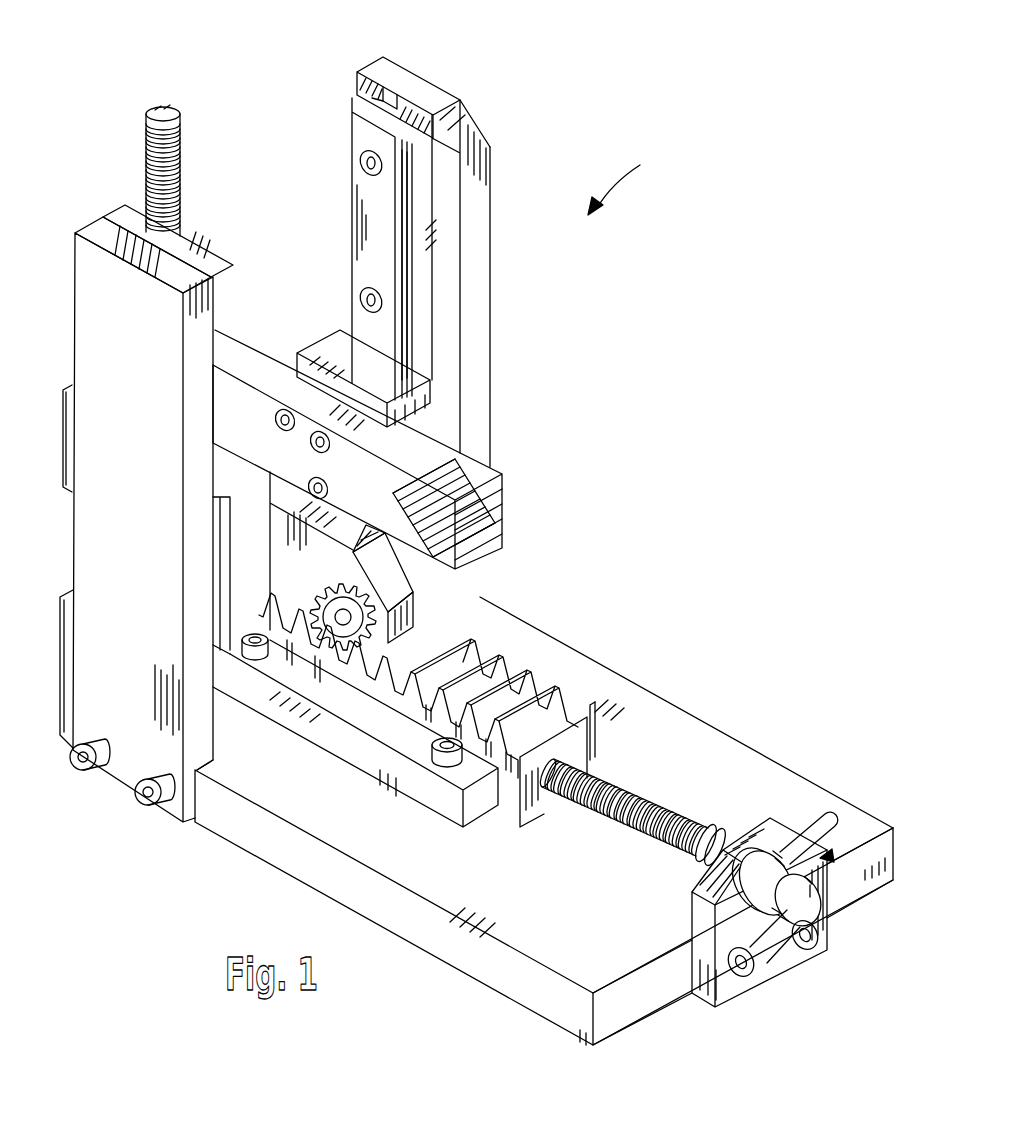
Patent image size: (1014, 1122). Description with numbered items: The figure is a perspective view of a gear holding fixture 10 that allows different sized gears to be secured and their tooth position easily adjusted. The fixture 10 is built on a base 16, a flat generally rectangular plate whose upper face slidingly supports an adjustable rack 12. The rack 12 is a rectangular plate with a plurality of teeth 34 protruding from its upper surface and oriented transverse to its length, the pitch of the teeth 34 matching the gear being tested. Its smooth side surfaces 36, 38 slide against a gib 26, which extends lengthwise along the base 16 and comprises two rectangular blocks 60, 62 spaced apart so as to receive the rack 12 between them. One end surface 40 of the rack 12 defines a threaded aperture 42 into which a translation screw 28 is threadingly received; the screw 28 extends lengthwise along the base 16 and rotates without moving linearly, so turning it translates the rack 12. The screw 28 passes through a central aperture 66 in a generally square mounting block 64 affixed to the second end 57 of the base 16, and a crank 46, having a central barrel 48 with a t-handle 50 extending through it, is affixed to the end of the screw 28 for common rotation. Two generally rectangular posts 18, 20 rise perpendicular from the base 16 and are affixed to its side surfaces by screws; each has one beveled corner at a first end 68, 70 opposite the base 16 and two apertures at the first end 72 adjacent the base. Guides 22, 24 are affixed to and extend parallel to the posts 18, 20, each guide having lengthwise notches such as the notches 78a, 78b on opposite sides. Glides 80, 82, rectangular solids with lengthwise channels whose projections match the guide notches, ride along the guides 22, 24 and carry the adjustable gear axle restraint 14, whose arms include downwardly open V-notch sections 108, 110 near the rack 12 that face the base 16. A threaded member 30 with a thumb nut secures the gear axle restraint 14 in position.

The gear holding fixture 10 is at (628, 186).
The adjustable rack 12 is at (513, 653).
The adjustable gear axle restraint 14 is at (249, 322).
The base 16 is at (403, 897).
The post 18 is at (88, 272).
The post 20 is at (470, 117).
The guide 22 is at (173, 236).
The guide 24 is at (397, 110).
The gib 26 is at (388, 768).
The translation screw 28 is at (668, 800).
The threaded member 30 is at (163, 134).
The teeth 34 is at (527, 667).
The rack side surface 36 is at (512, 802).
The rack side surface 38 is at (600, 725).
The end surface 40 is at (537, 768).
The threaded aperture 42 is at (548, 792).
The crank 46 is at (830, 852).
The central barrel 48 is at (798, 903).
The t-handle 50 is at (763, 940).
The second end 57 is at (664, 990).
The rectangular block 60 is at (443, 803).
The rectangular block 62 is at (592, 703).
The mounting block 64 is at (777, 827).
The central aperture 66 is at (793, 830).
The first end 68 is at (170, 305).
The first end 70 is at (470, 130).
The first end 72 is at (122, 784).
The notch 78a is at (377, 102).
The notch 78b is at (405, 157).
The glide 80 is at (237, 560).
The glide 82 is at (318, 345).
The V-notch section 108 is at (303, 640).
The V-notch section 110 is at (497, 527).